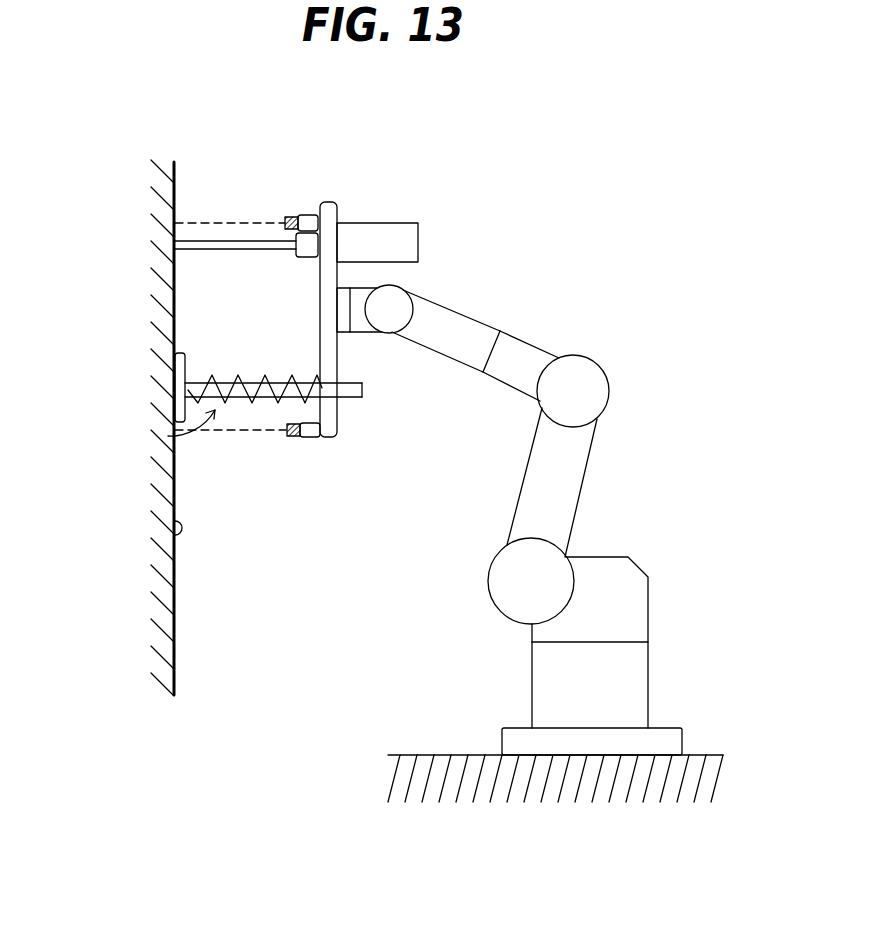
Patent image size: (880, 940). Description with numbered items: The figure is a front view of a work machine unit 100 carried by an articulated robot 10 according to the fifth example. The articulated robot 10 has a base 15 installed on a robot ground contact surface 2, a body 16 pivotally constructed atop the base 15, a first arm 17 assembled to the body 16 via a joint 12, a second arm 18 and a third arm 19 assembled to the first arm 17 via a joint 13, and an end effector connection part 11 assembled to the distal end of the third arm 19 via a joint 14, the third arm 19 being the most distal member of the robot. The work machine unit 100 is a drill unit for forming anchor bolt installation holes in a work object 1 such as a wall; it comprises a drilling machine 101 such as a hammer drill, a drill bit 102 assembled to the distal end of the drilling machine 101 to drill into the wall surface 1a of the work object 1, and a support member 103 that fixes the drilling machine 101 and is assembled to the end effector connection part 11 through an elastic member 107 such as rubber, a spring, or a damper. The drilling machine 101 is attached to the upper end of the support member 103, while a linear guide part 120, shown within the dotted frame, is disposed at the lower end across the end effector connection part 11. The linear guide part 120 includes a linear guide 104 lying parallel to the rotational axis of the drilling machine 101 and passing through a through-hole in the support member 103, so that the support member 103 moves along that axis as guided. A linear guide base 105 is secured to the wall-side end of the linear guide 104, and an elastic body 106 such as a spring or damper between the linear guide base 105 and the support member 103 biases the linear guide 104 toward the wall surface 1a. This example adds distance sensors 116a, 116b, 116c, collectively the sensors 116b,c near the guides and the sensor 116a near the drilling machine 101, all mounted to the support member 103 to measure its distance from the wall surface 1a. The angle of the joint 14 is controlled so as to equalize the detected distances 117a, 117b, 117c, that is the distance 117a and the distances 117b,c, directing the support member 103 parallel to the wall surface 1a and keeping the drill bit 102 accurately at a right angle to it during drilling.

The work object 1 is at (155, 190).
The wall surface 1a is at (155, 538).
The robot ground contact surface 2 is at (435, 753).
The articulated robot 10 is at (553, 505).
The end effector connection part 11 is at (420, 328).
The joint 12 is at (498, 578).
The joint 13 is at (585, 373).
The joint 14 is at (393, 328).
The base 15 is at (647, 675).
The body 16 is at (638, 572).
The first arm 17 is at (573, 485).
The second arm 18 is at (523, 350).
The third arm 19 is at (452, 315).
The work machine unit 100 is at (282, 318).
The drilling machine 101 is at (418, 230).
The drill bit 102 is at (170, 245).
The support member 103 is at (332, 202).
The linear guide 104 is at (350, 398).
The linear guide base 105 is at (180, 378).
The elastic body 106 is at (265, 375).
The elastic member 107 is at (343, 303).
The distance sensor 116a is at (296, 217).
The distance sensors 116b,c is at (315, 480).
The distance sensor 116b is at (315, 480).
The distance sensor 116c is at (310, 437).
The distance 117a is at (213, 223).
The distances 117b,c is at (230, 472).
The distance 117b is at (230, 472).
The distance 117c is at (230, 432).
The linear guide part 120 is at (170, 436).